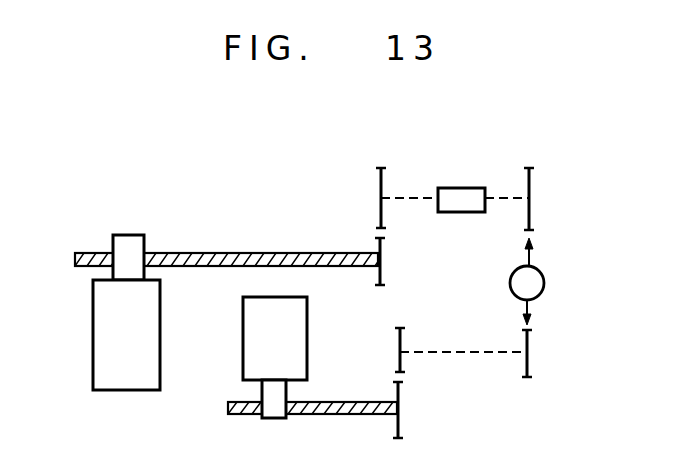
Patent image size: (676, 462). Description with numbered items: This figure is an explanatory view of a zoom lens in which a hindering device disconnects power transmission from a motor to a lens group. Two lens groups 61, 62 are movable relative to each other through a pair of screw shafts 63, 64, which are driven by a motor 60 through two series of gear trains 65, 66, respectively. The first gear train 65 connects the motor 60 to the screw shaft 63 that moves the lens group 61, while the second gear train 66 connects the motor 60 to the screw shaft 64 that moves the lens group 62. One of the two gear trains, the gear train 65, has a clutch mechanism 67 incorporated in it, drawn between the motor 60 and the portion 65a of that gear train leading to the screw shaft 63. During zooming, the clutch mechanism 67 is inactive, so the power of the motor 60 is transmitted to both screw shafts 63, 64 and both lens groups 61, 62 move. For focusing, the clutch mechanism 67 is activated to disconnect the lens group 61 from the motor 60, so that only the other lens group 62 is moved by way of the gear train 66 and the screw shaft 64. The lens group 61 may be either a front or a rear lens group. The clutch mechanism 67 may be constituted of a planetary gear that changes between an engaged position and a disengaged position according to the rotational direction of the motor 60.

The motor 60 is at (545, 283).
The lens group 61 is at (102, 334).
The lens group 62 is at (253, 335).
The screw shaft 63 is at (243, 252).
The screw shaft 64 is at (352, 402).
The gear train 65 is at (505, 198).
The transmission coupling end 65a is at (414, 198).
The gear train 66 is at (460, 353).
The clutch mechanism 67 is at (460, 188).